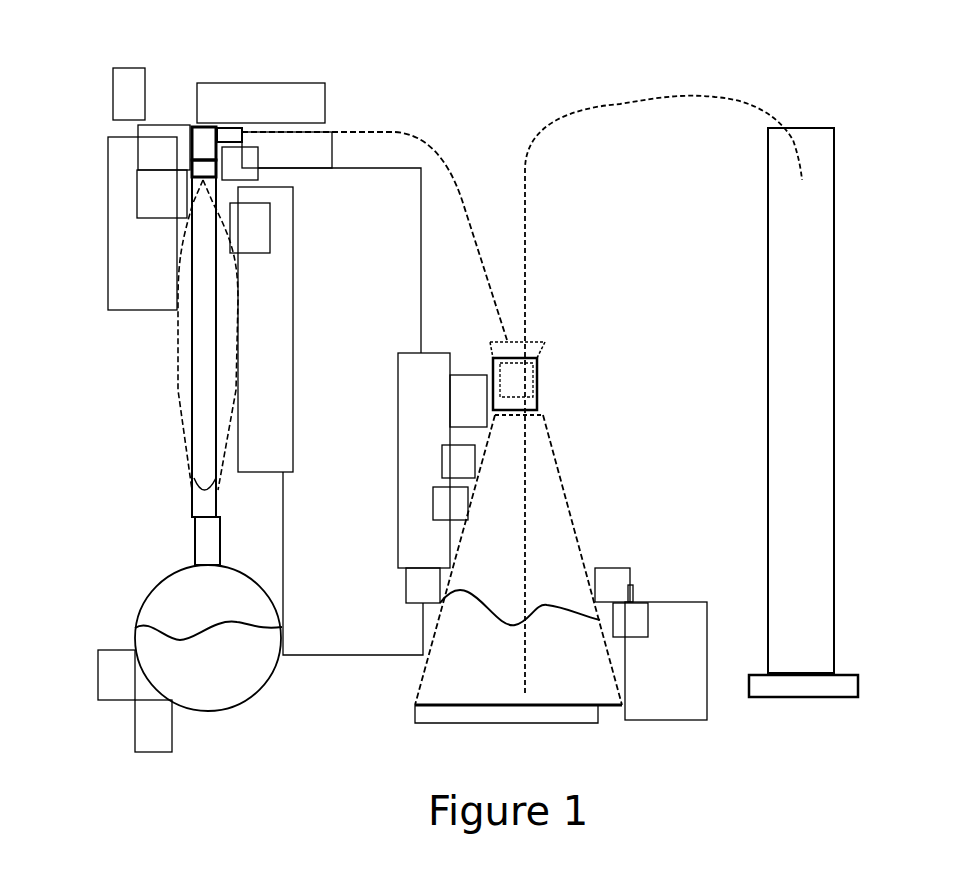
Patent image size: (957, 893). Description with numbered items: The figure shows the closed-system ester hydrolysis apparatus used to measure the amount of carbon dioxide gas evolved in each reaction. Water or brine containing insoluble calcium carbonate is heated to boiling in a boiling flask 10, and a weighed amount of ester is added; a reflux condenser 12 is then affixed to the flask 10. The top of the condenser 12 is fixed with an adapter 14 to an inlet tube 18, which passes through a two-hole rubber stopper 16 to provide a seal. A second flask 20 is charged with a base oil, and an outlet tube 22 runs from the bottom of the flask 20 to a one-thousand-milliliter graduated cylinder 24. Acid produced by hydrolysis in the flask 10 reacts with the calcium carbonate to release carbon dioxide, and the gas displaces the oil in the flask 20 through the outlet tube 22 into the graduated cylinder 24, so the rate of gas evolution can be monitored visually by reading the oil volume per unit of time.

The boiling flask 10 is at (138, 662).
The reflux condenser 12 is at (177, 298).
The adapter 14 is at (190, 170).
The 2-hole rubber stopper 16 is at (202, 127).
The inlet tube 18 is at (372, 133).
The flask 20 is at (468, 503).
The outlet tube 22 is at (525, 287).
The graduated cylinder 24 is at (838, 378).